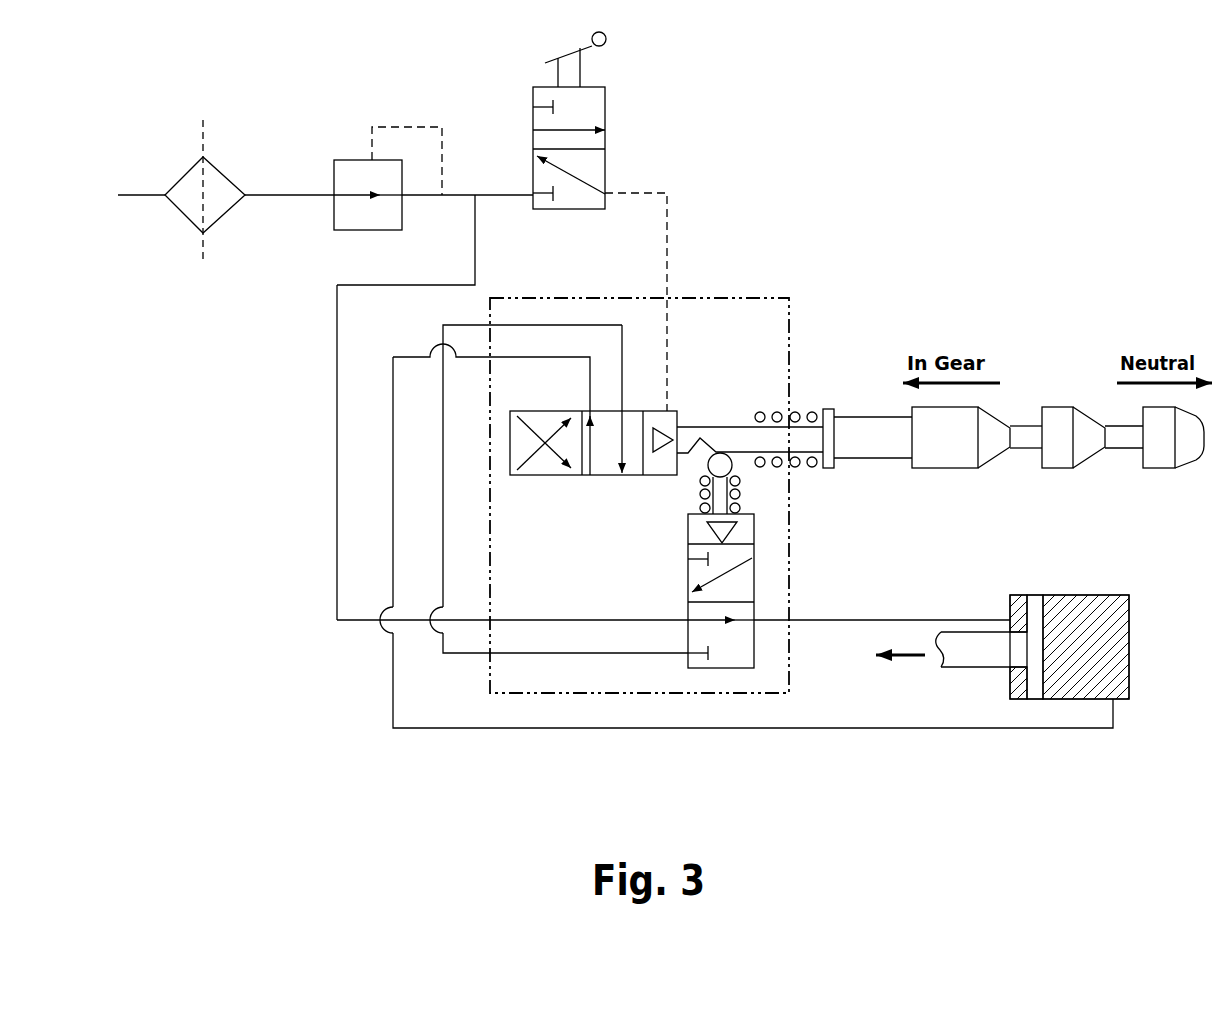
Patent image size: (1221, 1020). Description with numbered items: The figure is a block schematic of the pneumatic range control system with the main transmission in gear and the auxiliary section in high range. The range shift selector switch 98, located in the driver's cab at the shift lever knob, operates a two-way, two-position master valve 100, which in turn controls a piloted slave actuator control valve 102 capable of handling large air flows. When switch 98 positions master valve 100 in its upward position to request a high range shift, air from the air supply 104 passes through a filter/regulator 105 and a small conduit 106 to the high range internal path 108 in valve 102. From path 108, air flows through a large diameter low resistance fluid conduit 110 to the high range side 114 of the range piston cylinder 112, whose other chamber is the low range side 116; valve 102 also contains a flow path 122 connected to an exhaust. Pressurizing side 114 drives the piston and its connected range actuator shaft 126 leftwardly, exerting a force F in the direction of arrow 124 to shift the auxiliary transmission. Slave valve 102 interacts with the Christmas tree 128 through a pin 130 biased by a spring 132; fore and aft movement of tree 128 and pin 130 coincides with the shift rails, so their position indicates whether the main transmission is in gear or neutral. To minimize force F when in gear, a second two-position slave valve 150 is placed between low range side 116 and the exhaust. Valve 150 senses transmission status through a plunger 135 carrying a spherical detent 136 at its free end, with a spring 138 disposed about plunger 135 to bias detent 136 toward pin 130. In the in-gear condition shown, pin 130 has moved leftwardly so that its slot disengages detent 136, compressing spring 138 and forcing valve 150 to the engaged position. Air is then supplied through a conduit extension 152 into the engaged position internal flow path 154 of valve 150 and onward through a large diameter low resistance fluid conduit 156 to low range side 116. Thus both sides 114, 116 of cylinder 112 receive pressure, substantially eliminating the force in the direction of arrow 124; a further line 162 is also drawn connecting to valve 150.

The range shift selector switch 98 is at (590, 50).
The master valve 100 is at (532, 107).
The slave actuator control valve 102 is at (636, 437).
The air supply 104 is at (220, 172).
The filter/regulator 105 is at (342, 160).
The conduit 106 is at (473, 242).
The high range internal path 108 is at (593, 458).
The fluid conduit 110 is at (607, 732).
The range piston cylinder 112 is at (1074, 628).
The high range side 114 is at (1097, 672).
The low range side 116 is at (1013, 597).
The flow path 122 is at (620, 446).
The arrow 124 is at (902, 660).
The range actuator shaft 126 is at (972, 652).
The Christmas tree 128 is at (952, 453).
The pin 130 is at (730, 437).
The spring 132 is at (796, 411).
The plunger 135 is at (722, 500).
The detent 136 is at (722, 464).
The spring 138 is at (735, 506).
The second two-position slave valve 150 is at (746, 591).
The conduit extension 152 is at (618, 618).
The engaged position internal flow path 154 is at (715, 619).
The fluid conduit 156 is at (862, 616).
The pilot line 162 is at (605, 655).